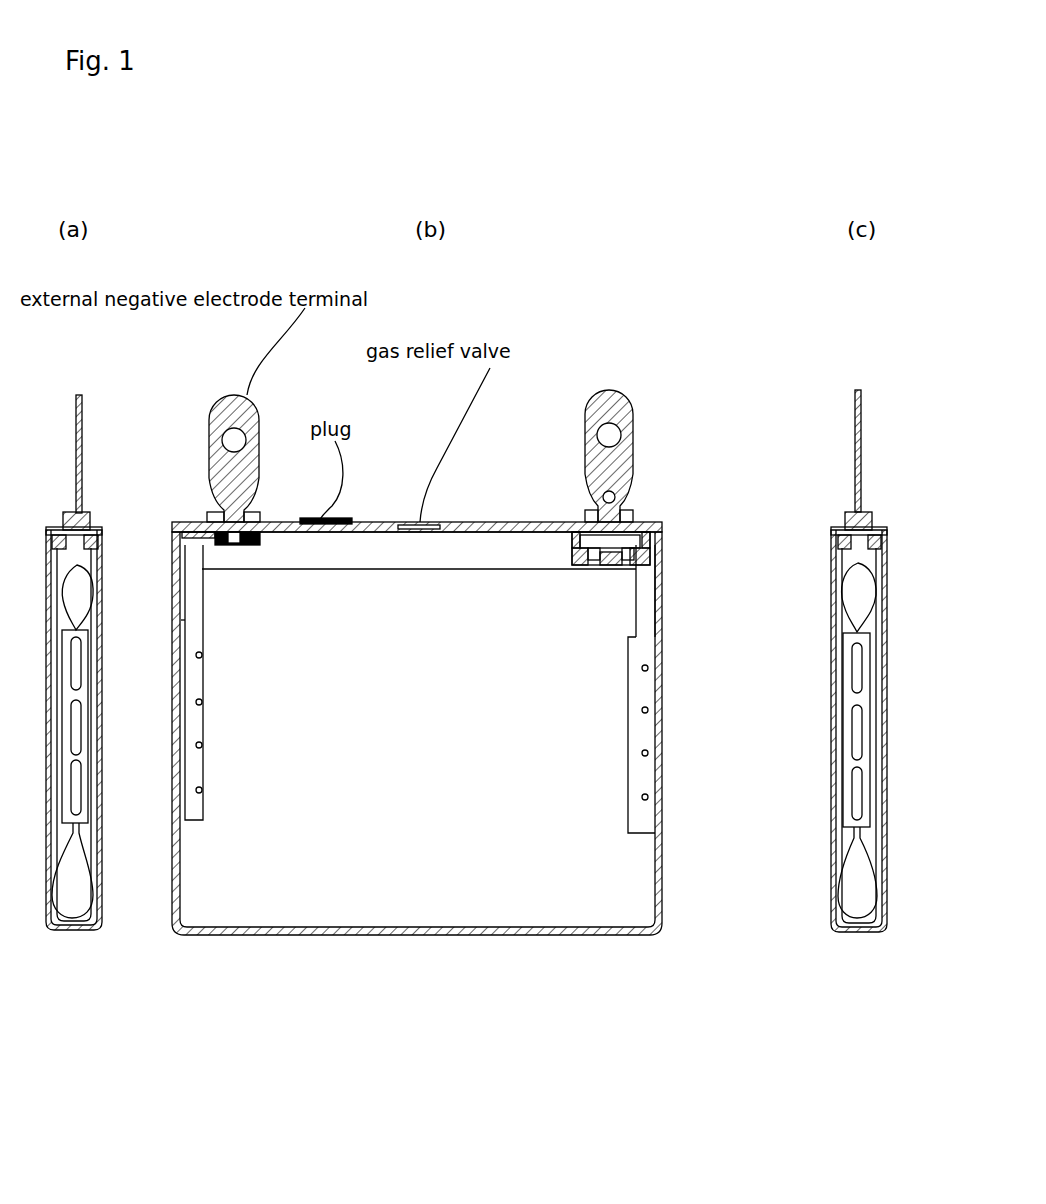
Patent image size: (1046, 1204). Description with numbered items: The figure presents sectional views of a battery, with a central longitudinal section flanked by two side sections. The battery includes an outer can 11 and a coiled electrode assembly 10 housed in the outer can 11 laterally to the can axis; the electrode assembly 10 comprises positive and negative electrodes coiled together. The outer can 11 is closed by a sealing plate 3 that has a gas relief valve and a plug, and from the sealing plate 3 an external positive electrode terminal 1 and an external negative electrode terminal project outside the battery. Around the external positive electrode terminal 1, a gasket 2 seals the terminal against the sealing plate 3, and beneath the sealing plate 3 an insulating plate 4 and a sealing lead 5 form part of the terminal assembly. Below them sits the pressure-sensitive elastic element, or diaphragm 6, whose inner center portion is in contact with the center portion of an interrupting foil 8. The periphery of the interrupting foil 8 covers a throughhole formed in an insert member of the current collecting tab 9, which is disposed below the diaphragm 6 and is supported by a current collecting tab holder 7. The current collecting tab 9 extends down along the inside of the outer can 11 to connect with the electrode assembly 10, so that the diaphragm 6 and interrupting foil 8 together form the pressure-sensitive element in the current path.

The external positive electrode terminal 1 is at (617, 400).
The gasket 2 is at (628, 521).
The sealing plate 3 is at (490, 522).
The insulating plate 4 is at (574, 540).
The sealing lead 5 is at (655, 544).
The pressure-sensitive elastic element (diaphragm) 6 is at (588, 556).
The current collecting tab holder 7 is at (572, 550).
The interrupting foil 8 is at (606, 565).
The current collecting tab 9 is at (650, 603).
The electrode assembly 10 is at (512, 880).
The outer can 11 is at (660, 718).